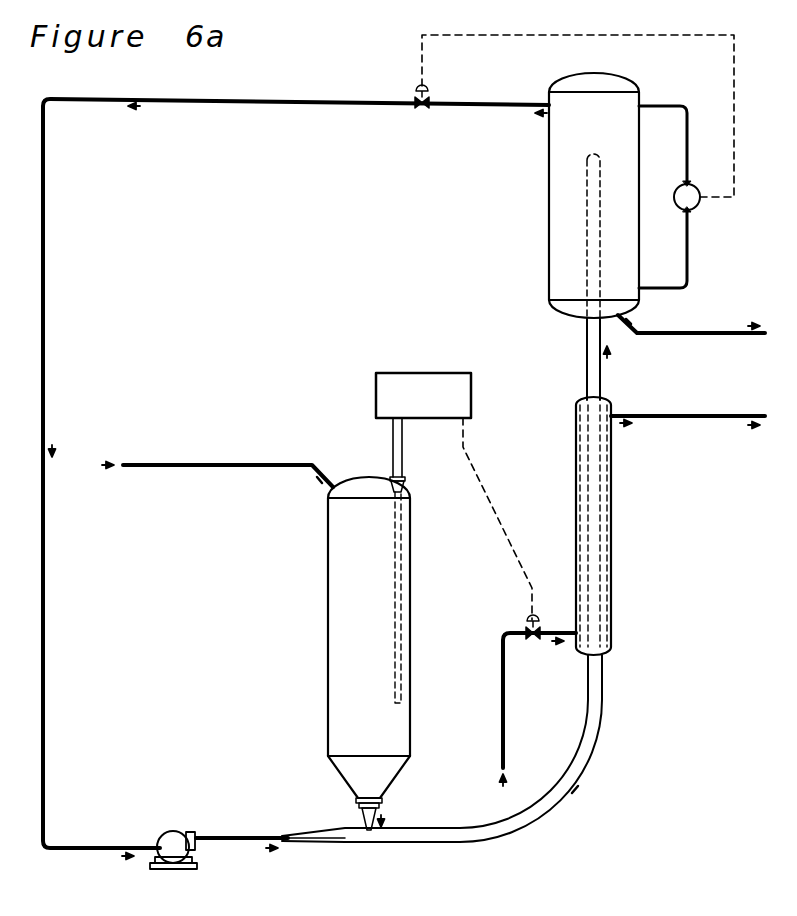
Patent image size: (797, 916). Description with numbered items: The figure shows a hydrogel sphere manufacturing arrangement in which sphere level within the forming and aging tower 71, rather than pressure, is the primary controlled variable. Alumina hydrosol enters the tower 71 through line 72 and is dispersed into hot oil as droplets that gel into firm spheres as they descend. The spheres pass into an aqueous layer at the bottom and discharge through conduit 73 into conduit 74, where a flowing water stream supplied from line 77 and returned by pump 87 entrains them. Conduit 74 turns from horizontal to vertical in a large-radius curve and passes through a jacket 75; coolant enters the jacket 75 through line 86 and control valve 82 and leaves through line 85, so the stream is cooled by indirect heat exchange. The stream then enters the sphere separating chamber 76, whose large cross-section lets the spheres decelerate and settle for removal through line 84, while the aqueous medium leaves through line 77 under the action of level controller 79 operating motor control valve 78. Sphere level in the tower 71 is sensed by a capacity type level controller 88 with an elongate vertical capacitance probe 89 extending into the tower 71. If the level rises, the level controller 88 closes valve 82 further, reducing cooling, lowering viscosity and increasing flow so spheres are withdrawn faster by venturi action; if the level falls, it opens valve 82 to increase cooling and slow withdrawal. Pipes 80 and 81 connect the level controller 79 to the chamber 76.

The forming and aging tower 71 is at (290, 538).
The line 72 is at (178, 463).
The conduit 73 is at (360, 820).
The conduit 74 is at (586, 355).
The jacket 75 is at (612, 496).
The sphere separating chamber 76 is at (620, 81).
The line 77 is at (477, 104).
The motor control valve 78 is at (416, 92).
The level controller 79 is at (698, 207).
The pipe 80 is at (675, 107).
The pipe 81 is at (682, 287).
The control valve 82 is at (528, 620).
The line 84 is at (684, 338).
The line 85 is at (677, 415).
The line 86 is at (505, 733).
The pump 87 is at (170, 870).
The level controller 88 is at (415, 373).
The capacitance probe 89 is at (392, 448).